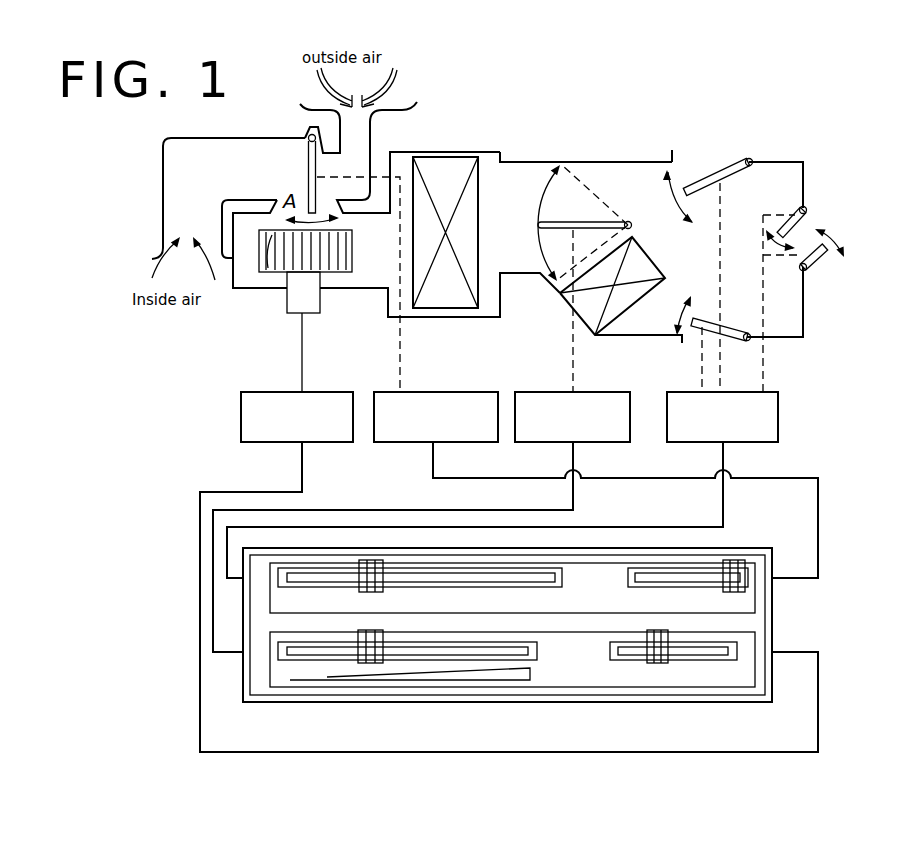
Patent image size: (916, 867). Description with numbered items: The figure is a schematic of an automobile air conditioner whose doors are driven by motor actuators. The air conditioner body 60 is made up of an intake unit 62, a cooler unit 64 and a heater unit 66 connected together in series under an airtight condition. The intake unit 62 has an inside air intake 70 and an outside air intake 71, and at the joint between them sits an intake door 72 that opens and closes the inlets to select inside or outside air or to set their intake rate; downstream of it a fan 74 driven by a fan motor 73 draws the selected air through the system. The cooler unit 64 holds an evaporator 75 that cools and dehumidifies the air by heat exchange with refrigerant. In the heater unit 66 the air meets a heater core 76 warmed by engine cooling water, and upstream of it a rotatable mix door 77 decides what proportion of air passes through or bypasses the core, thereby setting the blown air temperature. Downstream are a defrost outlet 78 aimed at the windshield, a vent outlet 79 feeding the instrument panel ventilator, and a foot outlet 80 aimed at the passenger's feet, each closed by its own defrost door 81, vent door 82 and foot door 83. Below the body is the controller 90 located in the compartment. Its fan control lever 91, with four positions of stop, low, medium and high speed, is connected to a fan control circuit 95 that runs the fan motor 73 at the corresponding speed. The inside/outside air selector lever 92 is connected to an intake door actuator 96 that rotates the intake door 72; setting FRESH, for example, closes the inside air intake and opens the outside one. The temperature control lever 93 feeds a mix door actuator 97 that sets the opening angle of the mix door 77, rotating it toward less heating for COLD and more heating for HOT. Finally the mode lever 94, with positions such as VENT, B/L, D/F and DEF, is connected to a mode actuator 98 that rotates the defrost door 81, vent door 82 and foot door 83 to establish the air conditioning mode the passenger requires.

The air conditioner body 60 is at (558, 157).
The intake unit 62 is at (355, 297).
The cooler unit 64 is at (457, 325).
The heater unit 66 is at (660, 341).
The inside air intake 70 is at (173, 192).
The outside air intake 71 is at (357, 135).
The intake door 72 is at (306, 164).
The fan motor 73 is at (293, 305).
The fan 74 is at (272, 270).
The evaporator 75 is at (442, 170).
The heater core 76 is at (567, 302).
The mix door 77 is at (568, 226).
The defrost outlet 78 is at (736, 153).
The vent outlet 79 is at (842, 228).
The foot outlet 80 is at (710, 340).
The defrost door 81 is at (710, 176).
The vent door 82 is at (807, 219).
The foot door 83 is at (703, 315).
The controller 90 is at (790, 612).
The fan control lever 91 is at (652, 663).
The inside/outside air selector lever 92 is at (737, 560).
The temperature control lever 93 is at (370, 663).
The mode lever 94 is at (370, 560).
The fan control circuit 95 is at (263, 437).
The intake door actuator 96 is at (399, 437).
The mix door actuator 97 is at (611, 437).
The mode actuator 98 is at (767, 437).